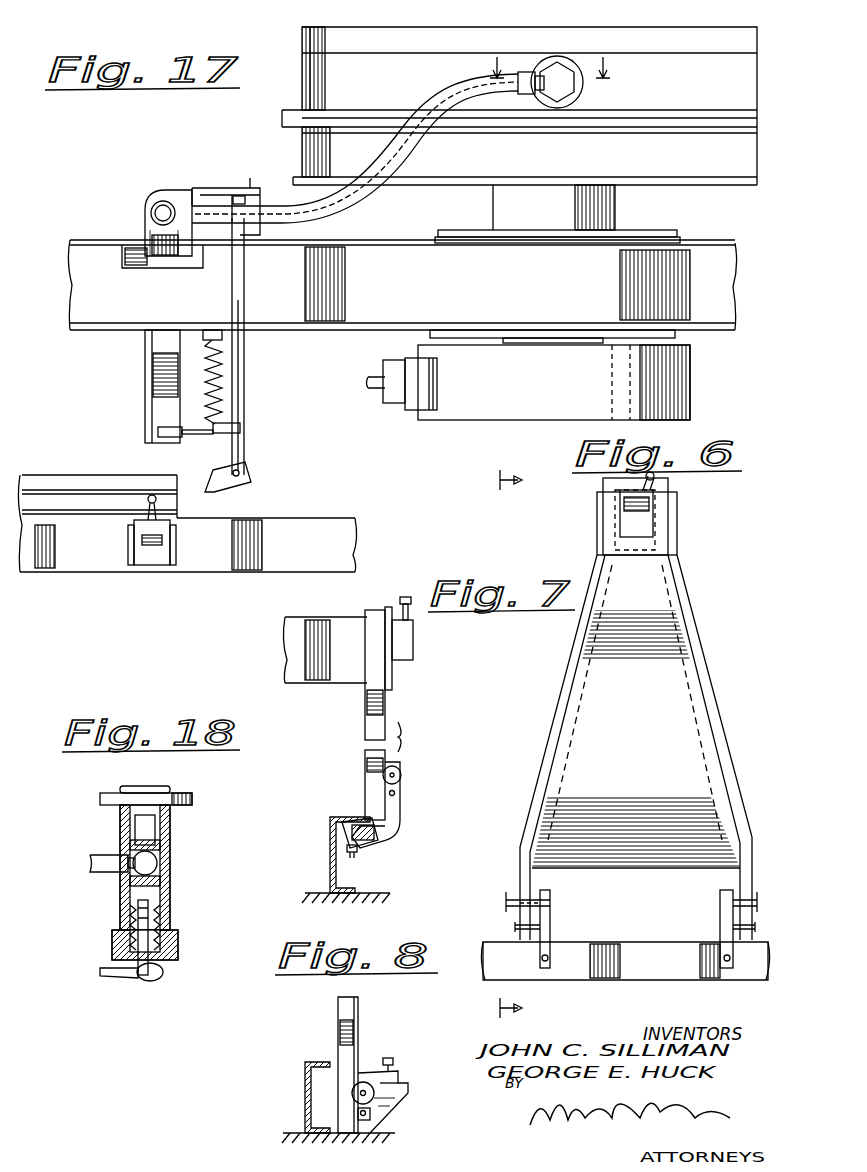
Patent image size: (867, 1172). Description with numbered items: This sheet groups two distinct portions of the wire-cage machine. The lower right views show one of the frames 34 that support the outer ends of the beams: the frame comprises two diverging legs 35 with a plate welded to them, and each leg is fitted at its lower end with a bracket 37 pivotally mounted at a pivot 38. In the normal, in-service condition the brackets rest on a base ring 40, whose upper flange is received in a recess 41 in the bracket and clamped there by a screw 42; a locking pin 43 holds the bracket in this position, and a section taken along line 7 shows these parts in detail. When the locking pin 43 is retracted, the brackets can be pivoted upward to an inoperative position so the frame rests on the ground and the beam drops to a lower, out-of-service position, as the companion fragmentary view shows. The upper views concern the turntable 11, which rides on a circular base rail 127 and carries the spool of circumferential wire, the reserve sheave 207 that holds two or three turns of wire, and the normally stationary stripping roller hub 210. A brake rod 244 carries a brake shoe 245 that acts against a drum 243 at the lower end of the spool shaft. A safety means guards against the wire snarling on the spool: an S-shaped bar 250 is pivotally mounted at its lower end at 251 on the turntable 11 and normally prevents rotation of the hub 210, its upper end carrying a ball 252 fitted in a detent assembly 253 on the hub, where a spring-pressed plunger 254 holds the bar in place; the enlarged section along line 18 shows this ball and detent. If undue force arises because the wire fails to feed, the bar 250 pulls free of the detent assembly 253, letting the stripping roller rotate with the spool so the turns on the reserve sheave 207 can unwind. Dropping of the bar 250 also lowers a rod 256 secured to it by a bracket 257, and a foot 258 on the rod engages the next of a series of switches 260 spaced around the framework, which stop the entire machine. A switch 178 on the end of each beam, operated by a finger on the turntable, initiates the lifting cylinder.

In FIG. 17, the turntable 11 is at (95, 240).
In FIG. 17, the section line 18— 18 is at (545, 55).
In FIG. 17, the circular base rail 127 is at (78, 485).
In FIG. 7, the switch 178 is at (413, 625).
In FIG. 6, the switch 178 is at (645, 519).
In FIG. 17, the reserve sheave 207 is at (620, 161).
In FIG. 17, the stripping roller hub 210 is at (706, 94).
In FIG. 17, the drum 243 is at (558, 393).
In FIG. 17, the brake rod 244 is at (373, 392).
In FIG. 17, the brake shoe 245 is at (410, 412).
In FIG. 17, the S-shaped bar 250 is at (338, 190).
In FIG. 18, the S-shaped bar 250 is at (105, 845).
In FIG. 17, the pivot mounting 251 is at (165, 205).
In FIG. 18, the ball 252 is at (158, 863).
In FIG. 18, the detent assembly 253 is at (172, 898).
In FIG. 18, the spring-pressed plunger 254 is at (132, 913).
In FIG. 17, the rod 256 is at (248, 372).
In FIG. 17, the bracket 257 is at (248, 190).
In FIG. 17, the foot 258 is at (252, 478).
In FIG. 17, the switches 260 is at (152, 565).
In FIG. 6, the section line 7— 7 is at (517, 744).
In FIG. 7, the frame 34 is at (362, 720).
In FIG. 6, the frame 34 is at (708, 652).
In FIG. 7, the diverging legs 35 is at (365, 762).
In FIG. 8, the diverging legs 35 is at (358, 1022).
In FIG. 6, the diverging legs 35 is at (572, 683).
In FIG. 7, the bracket 37 is at (400, 812).
In FIG. 8, the bracket 37 is at (400, 1072).
In FIG. 6, the bracket 37 is at (552, 903).
In FIG. 7, the pivot 38 is at (396, 793).
In FIG. 8, the pivot 38 is at (370, 1113).
In FIG. 6, the pivot 38 is at (552, 927).
In FIG. 7, the base ring 40 is at (330, 828).
In FIG. 8, the base ring 40 is at (305, 1087).
In FIG. 6, the base ring 40 is at (676, 974).
In FIG. 7, the recess 41 is at (362, 825).
In FIG. 8, the recess 41 is at (408, 1083).
In FIG. 7, the screw 42 is at (356, 852).
In FIG. 8, the screw 42 is at (392, 1058).
In FIG. 6, the screw 42 is at (540, 958).
In FIG. 7, the locking pin 43 is at (402, 775).
In FIG. 8, the locking pin 43 is at (374, 1093).
In FIG. 6, the locking pin 43 is at (506, 902).